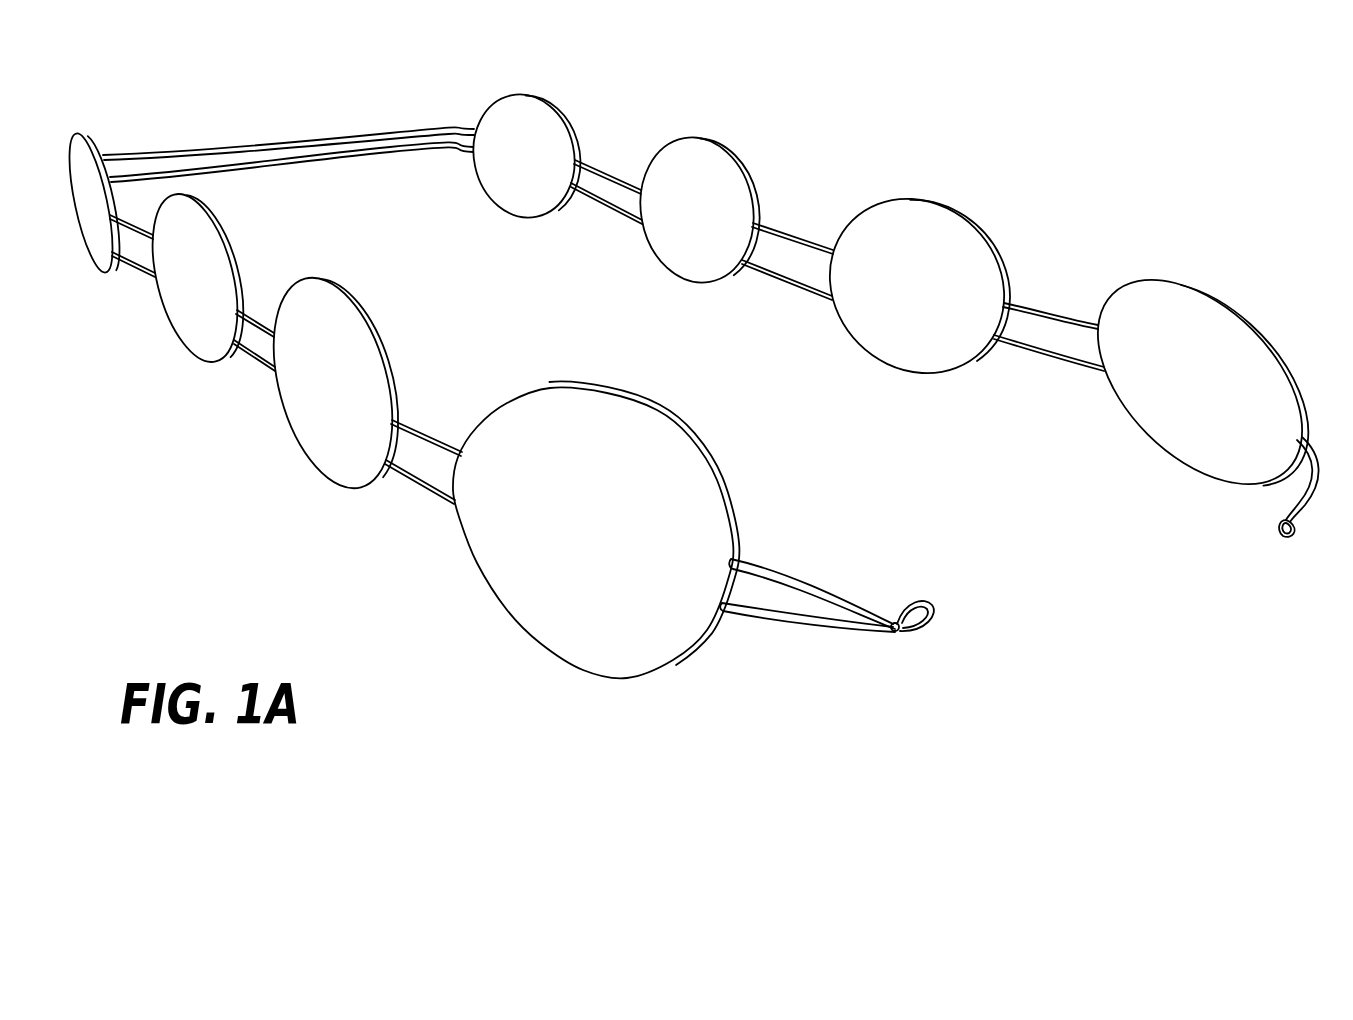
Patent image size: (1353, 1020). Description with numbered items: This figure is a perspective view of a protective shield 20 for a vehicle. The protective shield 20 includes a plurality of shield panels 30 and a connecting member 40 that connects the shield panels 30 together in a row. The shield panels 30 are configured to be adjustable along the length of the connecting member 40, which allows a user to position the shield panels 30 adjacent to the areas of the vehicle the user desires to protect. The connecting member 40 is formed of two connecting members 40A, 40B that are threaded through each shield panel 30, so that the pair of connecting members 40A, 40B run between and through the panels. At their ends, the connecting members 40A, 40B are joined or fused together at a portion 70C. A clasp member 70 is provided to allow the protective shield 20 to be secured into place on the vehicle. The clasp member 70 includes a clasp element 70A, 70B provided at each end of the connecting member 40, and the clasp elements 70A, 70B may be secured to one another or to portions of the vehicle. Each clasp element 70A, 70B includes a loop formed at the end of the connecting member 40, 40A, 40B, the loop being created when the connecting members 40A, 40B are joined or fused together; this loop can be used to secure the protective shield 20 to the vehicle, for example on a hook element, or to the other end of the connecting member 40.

The protective shield 20 is at (1115, 92).
The shield panel 30 is at (98, 253).
The connecting member 40 is at (313, 138).
The connecting member 40A is at (772, 583).
The connecting member 40B is at (760, 617).
The clasp member 70 is at (1244, 598).
The clasp element 70A is at (927, 630).
The clasp element 70B is at (1291, 535).
The portion 70C is at (895, 617).